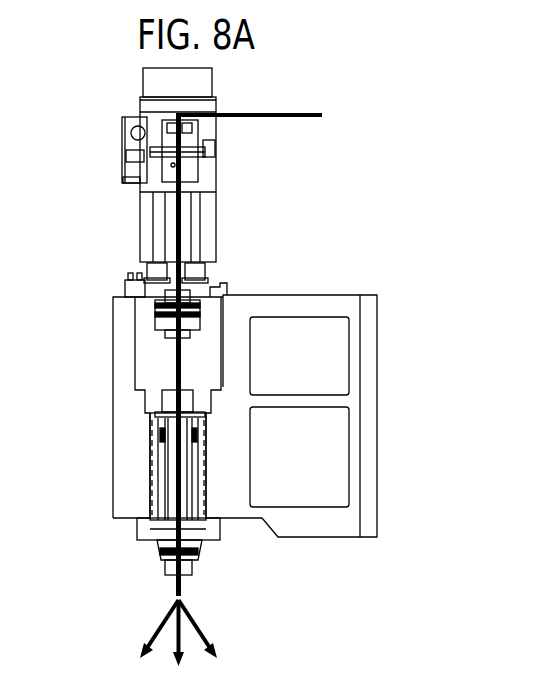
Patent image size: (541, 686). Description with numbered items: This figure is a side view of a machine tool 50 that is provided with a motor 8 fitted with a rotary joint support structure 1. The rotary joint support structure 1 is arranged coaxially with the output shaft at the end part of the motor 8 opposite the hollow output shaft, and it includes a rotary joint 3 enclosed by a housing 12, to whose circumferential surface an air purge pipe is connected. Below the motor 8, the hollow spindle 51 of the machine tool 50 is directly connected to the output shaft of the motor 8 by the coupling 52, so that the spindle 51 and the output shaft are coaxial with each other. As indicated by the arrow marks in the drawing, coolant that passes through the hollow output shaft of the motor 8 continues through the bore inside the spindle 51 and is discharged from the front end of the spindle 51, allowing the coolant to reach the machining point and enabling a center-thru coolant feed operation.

The rotary joint support structure 1 is at (100, 141).
The rotary joint 3 is at (172, 118).
The motor 8 is at (148, 222).
The housing 12 is at (214, 132).
The machine tool 50 is at (424, 339).
The hollow spindle 51 is at (187, 540).
The coupling 52 is at (165, 322).